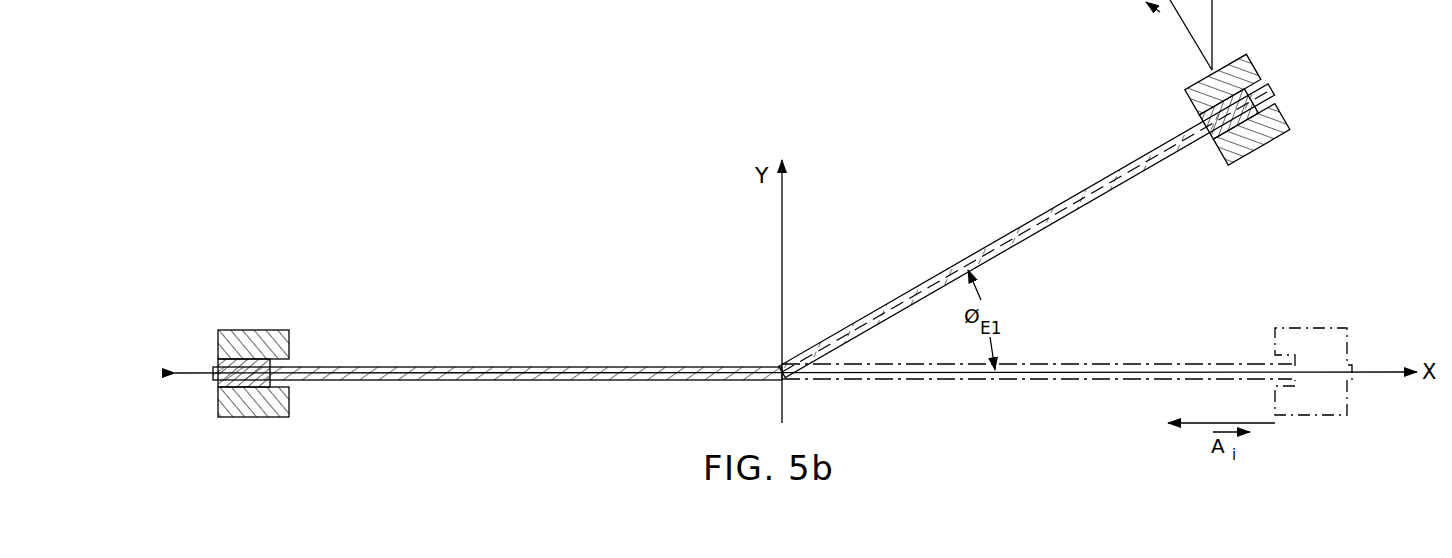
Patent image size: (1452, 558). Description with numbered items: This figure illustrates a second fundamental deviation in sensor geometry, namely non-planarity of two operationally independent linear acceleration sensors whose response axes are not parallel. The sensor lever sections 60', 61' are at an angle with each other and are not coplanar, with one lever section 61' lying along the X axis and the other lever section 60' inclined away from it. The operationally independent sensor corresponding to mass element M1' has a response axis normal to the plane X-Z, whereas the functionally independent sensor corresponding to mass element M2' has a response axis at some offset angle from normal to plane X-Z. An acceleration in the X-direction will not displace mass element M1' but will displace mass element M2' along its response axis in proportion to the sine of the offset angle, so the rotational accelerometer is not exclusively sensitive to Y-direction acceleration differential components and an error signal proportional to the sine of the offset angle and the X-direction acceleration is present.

The second arm (rotated beam/mirror support) 60' is at (1027, 231).
The first arm along X axis 61' is at (497, 328).
The mass element M1' is at (233, 368).
The mass element M2' is at (1274, 82).